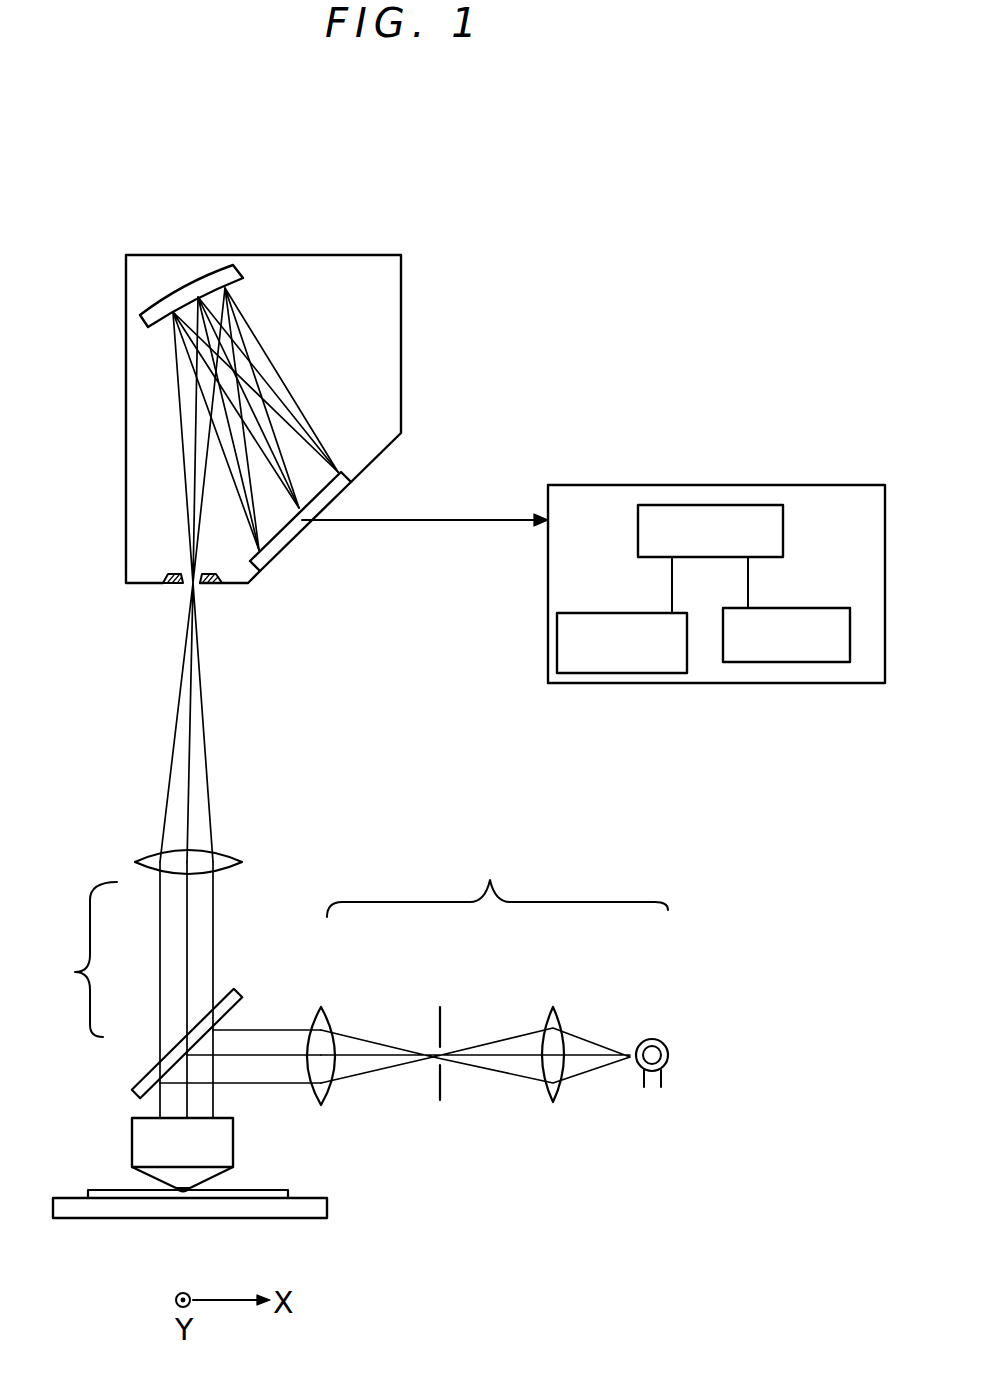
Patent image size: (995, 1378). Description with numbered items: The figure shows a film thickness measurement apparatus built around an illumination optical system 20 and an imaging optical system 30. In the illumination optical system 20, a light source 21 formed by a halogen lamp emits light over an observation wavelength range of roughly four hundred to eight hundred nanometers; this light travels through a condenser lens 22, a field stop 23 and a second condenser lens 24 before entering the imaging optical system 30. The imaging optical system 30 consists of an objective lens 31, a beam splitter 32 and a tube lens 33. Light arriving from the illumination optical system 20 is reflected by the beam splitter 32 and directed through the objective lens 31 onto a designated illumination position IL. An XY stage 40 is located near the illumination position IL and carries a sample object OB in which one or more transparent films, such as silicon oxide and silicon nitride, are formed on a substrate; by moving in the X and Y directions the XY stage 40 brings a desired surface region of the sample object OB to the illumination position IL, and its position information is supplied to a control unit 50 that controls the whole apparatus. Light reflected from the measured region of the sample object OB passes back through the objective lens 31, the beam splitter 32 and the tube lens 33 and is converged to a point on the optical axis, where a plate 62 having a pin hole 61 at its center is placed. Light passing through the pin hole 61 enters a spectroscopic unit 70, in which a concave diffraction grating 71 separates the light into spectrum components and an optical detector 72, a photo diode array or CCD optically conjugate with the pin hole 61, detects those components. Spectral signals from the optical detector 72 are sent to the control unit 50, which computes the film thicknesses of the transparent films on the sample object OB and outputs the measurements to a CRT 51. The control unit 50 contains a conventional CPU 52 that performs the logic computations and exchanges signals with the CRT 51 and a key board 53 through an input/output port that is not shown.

The spectroscopic unit 70 is at (372, 255).
The concave diffraction grating 71 is at (228, 265).
The optical detector 72 is at (342, 485).
The pin hole 61 is at (198, 587).
The plate 62 is at (222, 580).
The control unit 50 is at (716, 581).
The CPU 52 is at (720, 505).
The key board 53 is at (635, 675).
The CRT 51 is at (777, 662).
The imaging optical system 30 is at (137, 1021).
The tube lens 33 is at (155, 863).
The beam splitter 32 is at (142, 1078).
The objective lens 31 is at (137, 1143).
The illumination optical system 20 is at (491, 967).
The light source 21 is at (648, 1038).
The condenser lens 22 is at (553, 1007).
The field stop 23 is at (440, 1003).
The condenser lens 24 is at (320, 1007).
The XY stage 40 is at (313, 1210).
The sample object OB is at (287, 1193).
The illumination position IL is at (226, 1183).